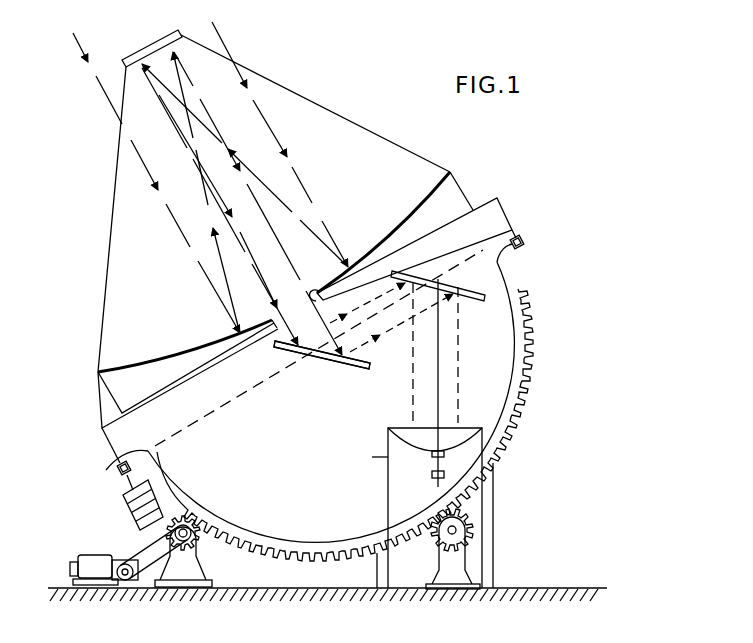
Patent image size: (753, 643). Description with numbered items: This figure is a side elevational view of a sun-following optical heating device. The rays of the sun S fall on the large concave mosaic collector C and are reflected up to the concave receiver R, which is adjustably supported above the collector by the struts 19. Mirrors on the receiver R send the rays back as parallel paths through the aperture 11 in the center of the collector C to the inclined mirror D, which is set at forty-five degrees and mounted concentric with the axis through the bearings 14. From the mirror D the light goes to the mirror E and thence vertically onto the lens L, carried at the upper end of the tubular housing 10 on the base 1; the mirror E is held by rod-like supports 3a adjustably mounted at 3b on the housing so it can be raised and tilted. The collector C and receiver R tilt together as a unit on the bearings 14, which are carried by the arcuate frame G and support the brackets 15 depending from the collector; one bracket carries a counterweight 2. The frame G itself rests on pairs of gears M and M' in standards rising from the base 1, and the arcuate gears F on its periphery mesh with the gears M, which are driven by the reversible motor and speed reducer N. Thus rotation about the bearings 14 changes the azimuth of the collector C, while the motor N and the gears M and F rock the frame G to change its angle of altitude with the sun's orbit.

The base 1 is at (304, 600).
The counterweight 2 is at (137, 517).
The rod-like supports 3a is at (438, 377).
The adjustable mountings 3b is at (444, 474).
The tubular housing 10 is at (412, 497).
The aperture 11 is at (319, 284).
The bearings 14 is at (519, 232).
The brackets 15 is at (508, 206).
The struts 19 is at (112, 232).
The collector C is at (187, 350).
The inclined mirror D is at (350, 364).
The mirror E is at (418, 281).
The arcuate gears F is at (520, 417).
The frame G is at (173, 473).
The lens L is at (374, 456).
The gears M is at (193, 551).
The gears M' is at (477, 549).
The motor and speed reducer N is at (80, 566).
The receiver R is at (160, 38).
The rays of the sun S is at (204, 175).